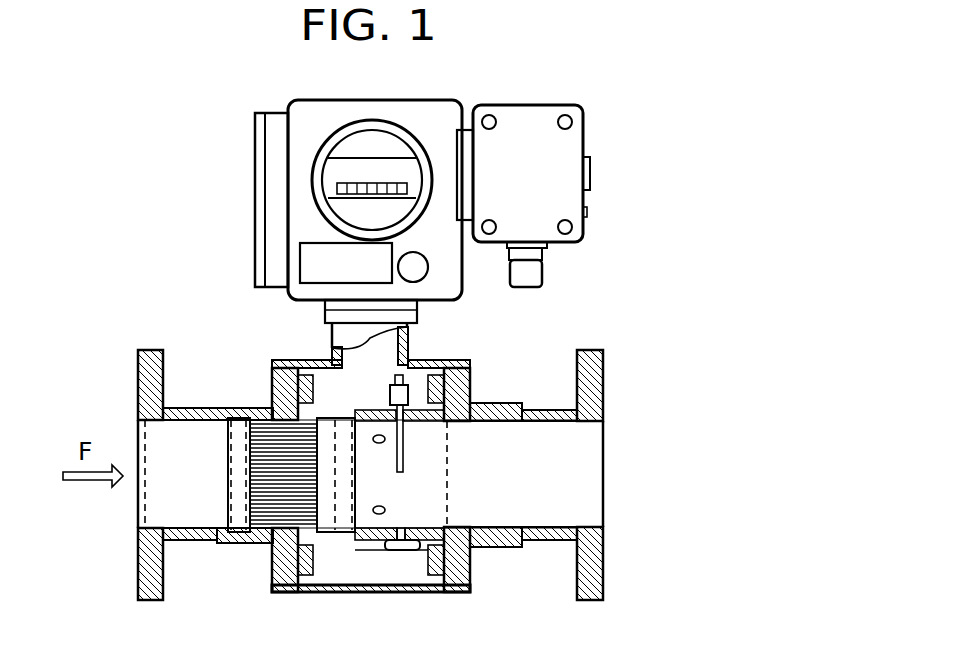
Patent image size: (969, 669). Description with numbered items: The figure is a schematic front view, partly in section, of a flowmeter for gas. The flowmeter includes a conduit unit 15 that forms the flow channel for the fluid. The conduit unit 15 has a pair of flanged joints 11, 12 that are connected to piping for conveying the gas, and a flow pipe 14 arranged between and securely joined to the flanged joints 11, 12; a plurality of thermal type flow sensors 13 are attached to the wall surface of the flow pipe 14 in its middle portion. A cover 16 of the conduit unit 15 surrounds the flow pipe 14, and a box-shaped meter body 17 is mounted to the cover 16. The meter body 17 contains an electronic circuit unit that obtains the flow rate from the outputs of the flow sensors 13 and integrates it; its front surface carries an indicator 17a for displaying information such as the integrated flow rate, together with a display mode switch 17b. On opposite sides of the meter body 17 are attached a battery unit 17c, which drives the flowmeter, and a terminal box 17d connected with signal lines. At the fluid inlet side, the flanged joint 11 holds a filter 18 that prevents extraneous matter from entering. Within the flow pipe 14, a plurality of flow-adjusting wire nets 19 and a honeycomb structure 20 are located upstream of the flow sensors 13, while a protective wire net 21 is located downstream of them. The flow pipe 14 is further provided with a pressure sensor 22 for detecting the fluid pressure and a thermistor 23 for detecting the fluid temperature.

The flanged joint 11 is at (143, 398).
The flanged joint 12 is at (603, 400).
The thermal type flow sensor 13 is at (378, 516).
The flow pipe 14 is at (330, 538).
The conduit unit 15 is at (580, 477).
The cover 16 is at (315, 355).
The meter body 17 is at (286, 101).
The indicator 17a is at (345, 172).
The display mode switch 17b is at (415, 268).
The battery unit 17c is at (255, 225).
The terminal box 17d is at (550, 146).
The filter 18 is at (140, 503).
The flow-adjusting wire net 19 is at (350, 458).
The honeycomb structure 20 is at (262, 518).
The protective wire net 21 is at (450, 488).
The pressure sensor 22 is at (405, 552).
The thermistor 23 is at (402, 450).